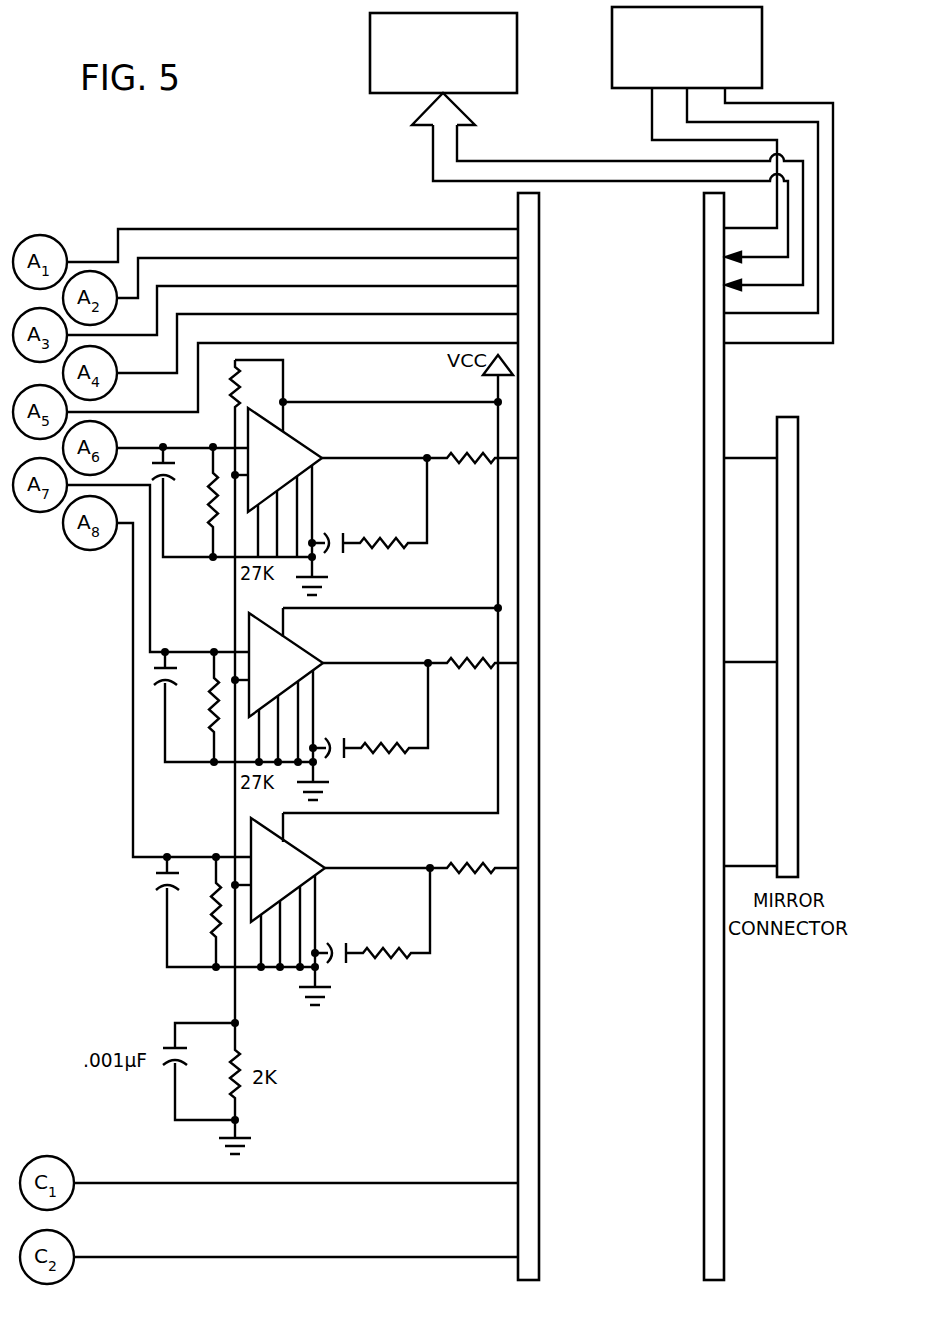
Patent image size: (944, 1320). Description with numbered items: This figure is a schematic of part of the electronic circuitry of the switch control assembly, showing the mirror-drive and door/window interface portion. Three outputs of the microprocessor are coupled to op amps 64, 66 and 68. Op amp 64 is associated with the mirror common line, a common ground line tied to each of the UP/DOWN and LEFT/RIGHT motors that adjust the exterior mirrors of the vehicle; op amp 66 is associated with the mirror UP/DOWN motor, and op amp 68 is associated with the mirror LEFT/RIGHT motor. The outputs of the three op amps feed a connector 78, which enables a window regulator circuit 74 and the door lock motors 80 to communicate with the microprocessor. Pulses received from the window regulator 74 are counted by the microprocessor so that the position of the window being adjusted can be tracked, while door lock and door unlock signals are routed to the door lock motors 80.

The door lock motors 80 is at (517, 50).
The window regulator 74 is at (762, 45).
The op amp 64 is at (288, 428).
The op amp 66 is at (299, 636).
The op amp 68 is at (300, 841).
The connector 78 is at (544, 1072).